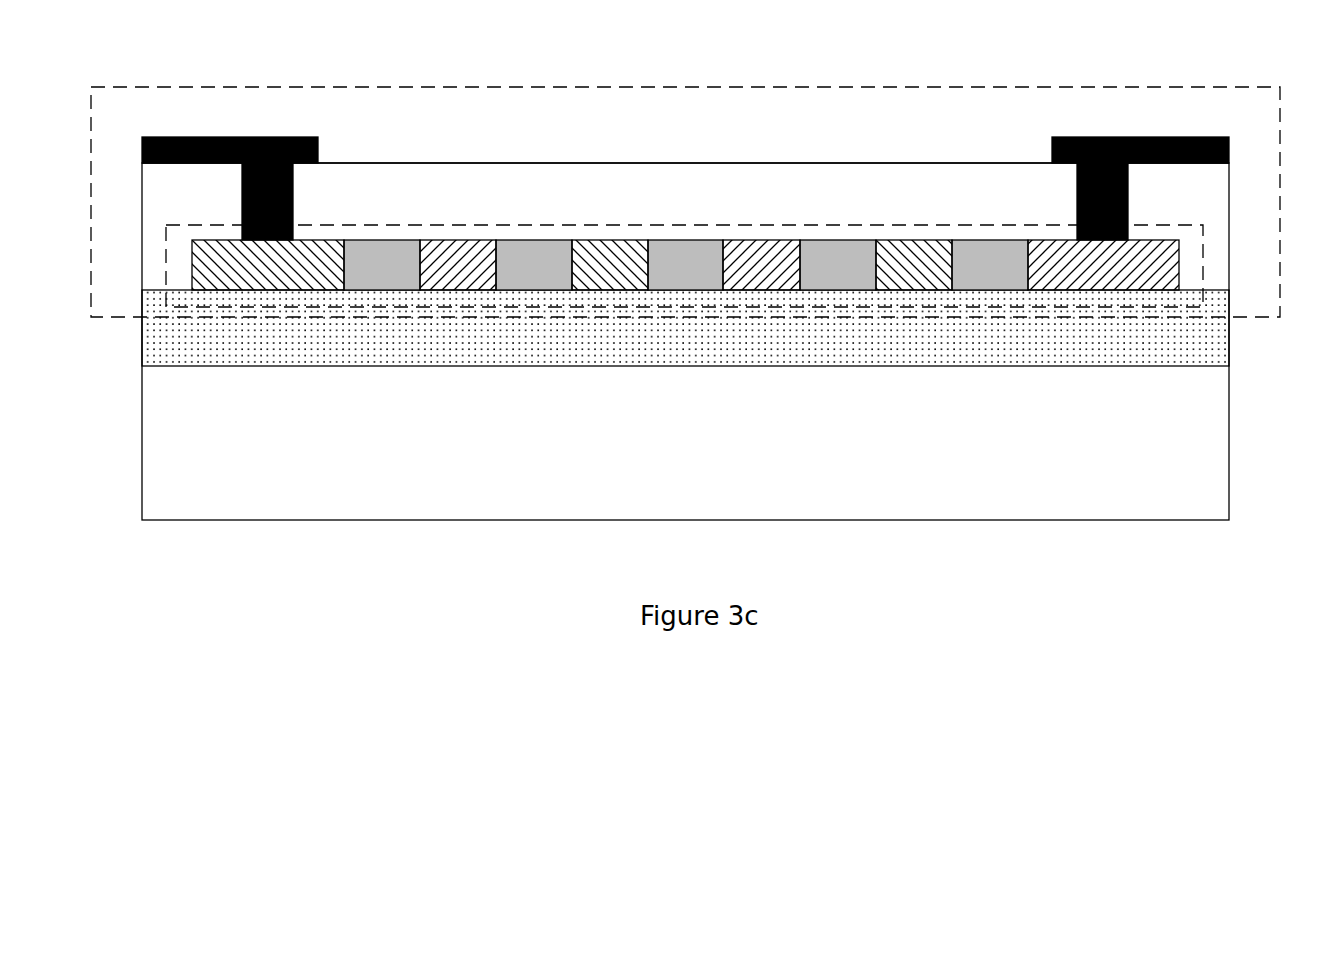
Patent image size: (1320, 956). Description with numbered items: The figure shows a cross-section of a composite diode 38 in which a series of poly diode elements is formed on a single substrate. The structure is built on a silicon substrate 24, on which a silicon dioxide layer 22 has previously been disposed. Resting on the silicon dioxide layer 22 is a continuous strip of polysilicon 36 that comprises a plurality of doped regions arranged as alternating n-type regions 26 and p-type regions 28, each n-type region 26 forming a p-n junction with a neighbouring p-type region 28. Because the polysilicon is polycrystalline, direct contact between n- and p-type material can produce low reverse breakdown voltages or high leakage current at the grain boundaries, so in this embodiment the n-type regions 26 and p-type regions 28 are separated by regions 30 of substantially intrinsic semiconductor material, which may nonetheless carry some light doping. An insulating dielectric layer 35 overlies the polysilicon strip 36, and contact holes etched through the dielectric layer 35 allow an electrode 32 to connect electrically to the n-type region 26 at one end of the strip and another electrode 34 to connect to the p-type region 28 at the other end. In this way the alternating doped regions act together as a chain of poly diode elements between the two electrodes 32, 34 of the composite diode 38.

The silicon dioxide layer 22 is at (1215, 350).
The silicon substrate 24 is at (1203, 463).
The n-type region 26 is at (227, 270).
The p-type region 28 is at (1147, 270).
The intrinsic semiconductor regions 30 is at (363, 277).
The electrode 32 is at (140, 140).
The electrode 34 is at (1230, 148).
The insulating dielectric layer 35 is at (711, 197).
The continuous strip of polysilicon 36 is at (1204, 238).
The composite diode 38 is at (1177, 60).